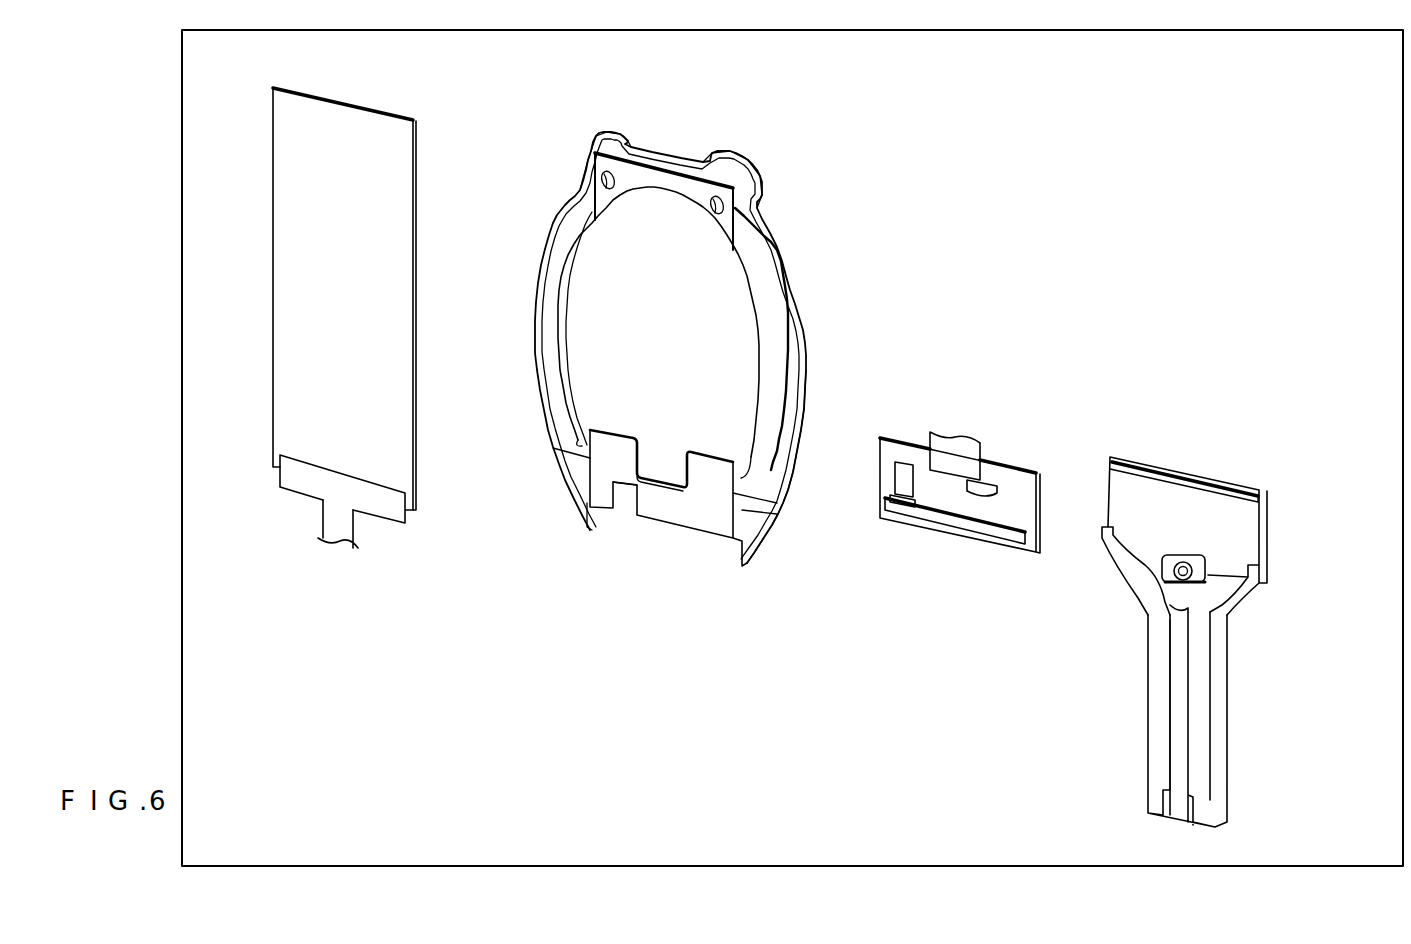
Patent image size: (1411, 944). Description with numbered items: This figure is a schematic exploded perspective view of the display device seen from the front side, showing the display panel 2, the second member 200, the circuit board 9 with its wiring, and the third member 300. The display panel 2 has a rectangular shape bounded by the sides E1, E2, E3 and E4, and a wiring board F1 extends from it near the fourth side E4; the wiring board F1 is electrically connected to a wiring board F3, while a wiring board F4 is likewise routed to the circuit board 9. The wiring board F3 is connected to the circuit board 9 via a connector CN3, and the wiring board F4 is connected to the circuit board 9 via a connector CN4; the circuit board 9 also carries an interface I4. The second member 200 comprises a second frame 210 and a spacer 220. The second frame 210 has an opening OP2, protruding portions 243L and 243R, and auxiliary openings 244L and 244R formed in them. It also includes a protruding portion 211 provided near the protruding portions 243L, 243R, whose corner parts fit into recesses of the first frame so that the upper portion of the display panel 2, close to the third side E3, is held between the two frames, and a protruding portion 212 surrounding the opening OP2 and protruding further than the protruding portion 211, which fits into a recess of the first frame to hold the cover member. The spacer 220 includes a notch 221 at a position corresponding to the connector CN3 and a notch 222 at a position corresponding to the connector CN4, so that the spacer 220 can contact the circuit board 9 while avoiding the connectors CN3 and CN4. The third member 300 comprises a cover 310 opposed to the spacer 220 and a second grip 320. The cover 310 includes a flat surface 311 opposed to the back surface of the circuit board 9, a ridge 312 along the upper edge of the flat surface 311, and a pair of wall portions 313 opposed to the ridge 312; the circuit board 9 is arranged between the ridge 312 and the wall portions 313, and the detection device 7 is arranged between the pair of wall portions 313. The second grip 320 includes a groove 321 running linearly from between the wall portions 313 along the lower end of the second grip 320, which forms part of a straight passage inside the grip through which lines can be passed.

The display panel 2 is at (351, 315).
The first side E1 is at (266, 251).
The second side E2 is at (430, 341).
The third side E3 is at (376, 104).
The fourth side E4 is at (419, 522).
The wiring board F1 is at (322, 521).
The second member 200 is at (710, 325).
The second frame 210 is at (683, 323).
The spacer 220 is at (730, 387).
The protruding portion 211 is at (664, 187).
The protruding portion 212 is at (778, 469).
The notch 221 is at (662, 468).
The notch 222 is at (630, 493).
The protruding portion 243L is at (597, 132).
The protruding portion 243R is at (760, 178).
The auxiliary opening 244L is at (618, 192).
The auxiliary opening 244R is at (712, 216).
The opening OP2 is at (565, 332).
The circuit board 9 is at (958, 503).
The interface connector I4 is at (990, 524).
The wiring board F3 is at (960, 440).
The wiring board F4 is at (908, 456).
The connector CN3 is at (987, 479).
The connector CN4 is at (893, 487).
The third member 300 is at (1245, 623).
The cover 310 is at (1217, 525).
The flat surface 311 is at (1252, 525).
The ridge 312 is at (1167, 478).
The pair of wall portions 313 is at (1215, 570).
The detection device 7 is at (1175, 574).
The second grip 320 is at (1240, 716).
The groove 321 is at (1185, 739).